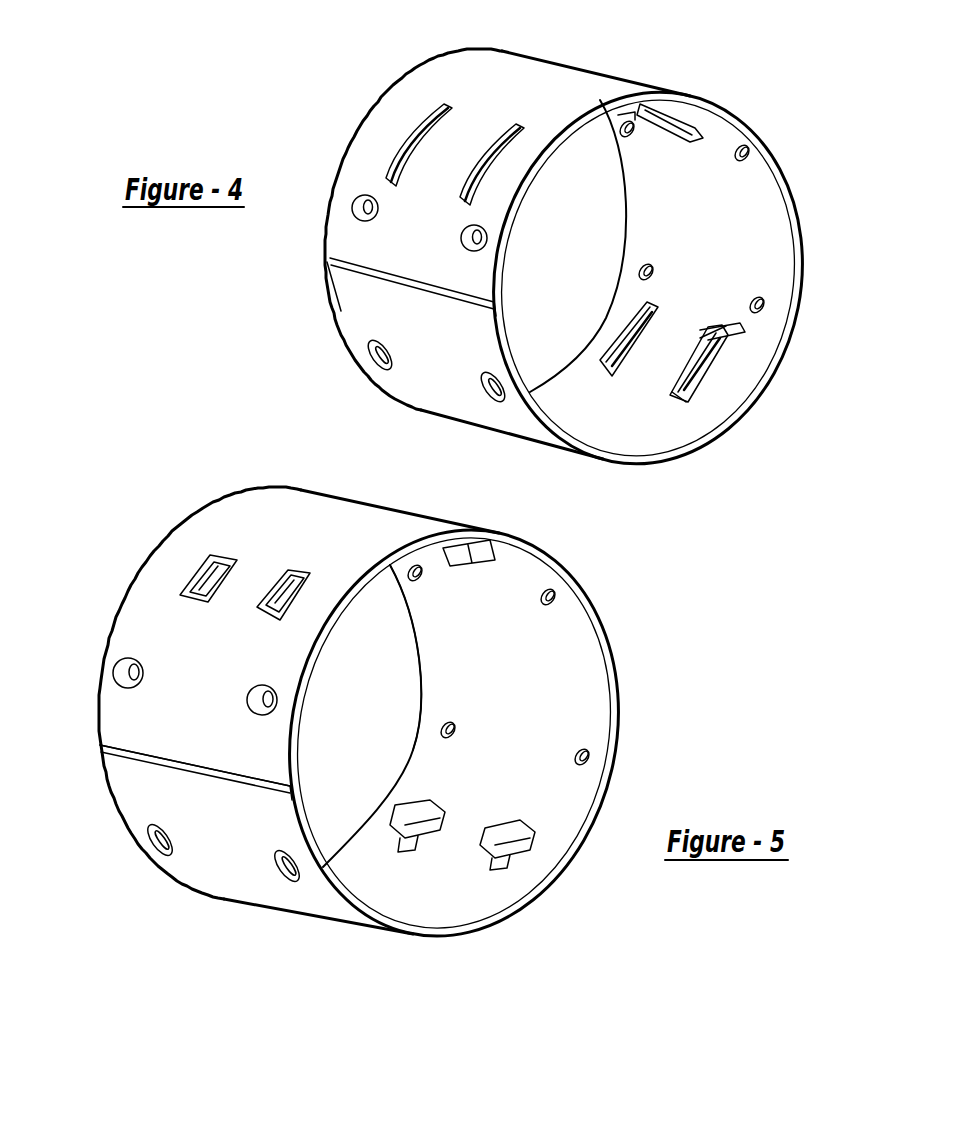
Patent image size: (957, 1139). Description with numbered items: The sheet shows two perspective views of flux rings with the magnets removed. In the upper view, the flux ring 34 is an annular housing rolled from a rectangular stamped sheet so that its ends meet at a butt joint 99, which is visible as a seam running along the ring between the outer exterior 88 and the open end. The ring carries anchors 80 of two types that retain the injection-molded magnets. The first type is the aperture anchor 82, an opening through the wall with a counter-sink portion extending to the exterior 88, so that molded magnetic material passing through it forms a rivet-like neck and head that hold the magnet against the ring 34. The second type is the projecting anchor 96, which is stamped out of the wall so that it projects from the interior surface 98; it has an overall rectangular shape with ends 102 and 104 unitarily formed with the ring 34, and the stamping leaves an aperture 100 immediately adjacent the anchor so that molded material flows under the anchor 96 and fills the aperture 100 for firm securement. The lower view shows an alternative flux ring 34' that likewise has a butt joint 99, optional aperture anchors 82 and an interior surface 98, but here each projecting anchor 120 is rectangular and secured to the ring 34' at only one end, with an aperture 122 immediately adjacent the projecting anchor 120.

In FIG. 4, the flux ring 34 is at (576, 253).
In FIG. 5, the flux ring 34' is at (378, 687).
In FIG. 4, the anchors 80 is at (353, 180).
In FIG. 4, the aperture anchor 82 is at (352, 204).
In FIG. 5, the aperture anchor 82 is at (116, 675).
In FIG. 4, the exterior 88 is at (357, 297).
In FIG. 4, the projecting anchor 96 is at (705, 372).
In FIG. 5, the interior surface 98 is at (546, 716).
In FIG. 4, the butt joint 99 is at (330, 257).
In FIG. 5, the butt joint 99 is at (100, 744).
In FIG. 4, the aperture 100 is at (722, 330).
In FIG. 4, the end 102 is at (722, 347).
In FIG. 4, the end 104 is at (702, 338).
In FIG. 5, the projecting anchor 120 is at (523, 841).
In FIG. 5, the aperture 122 is at (508, 866).